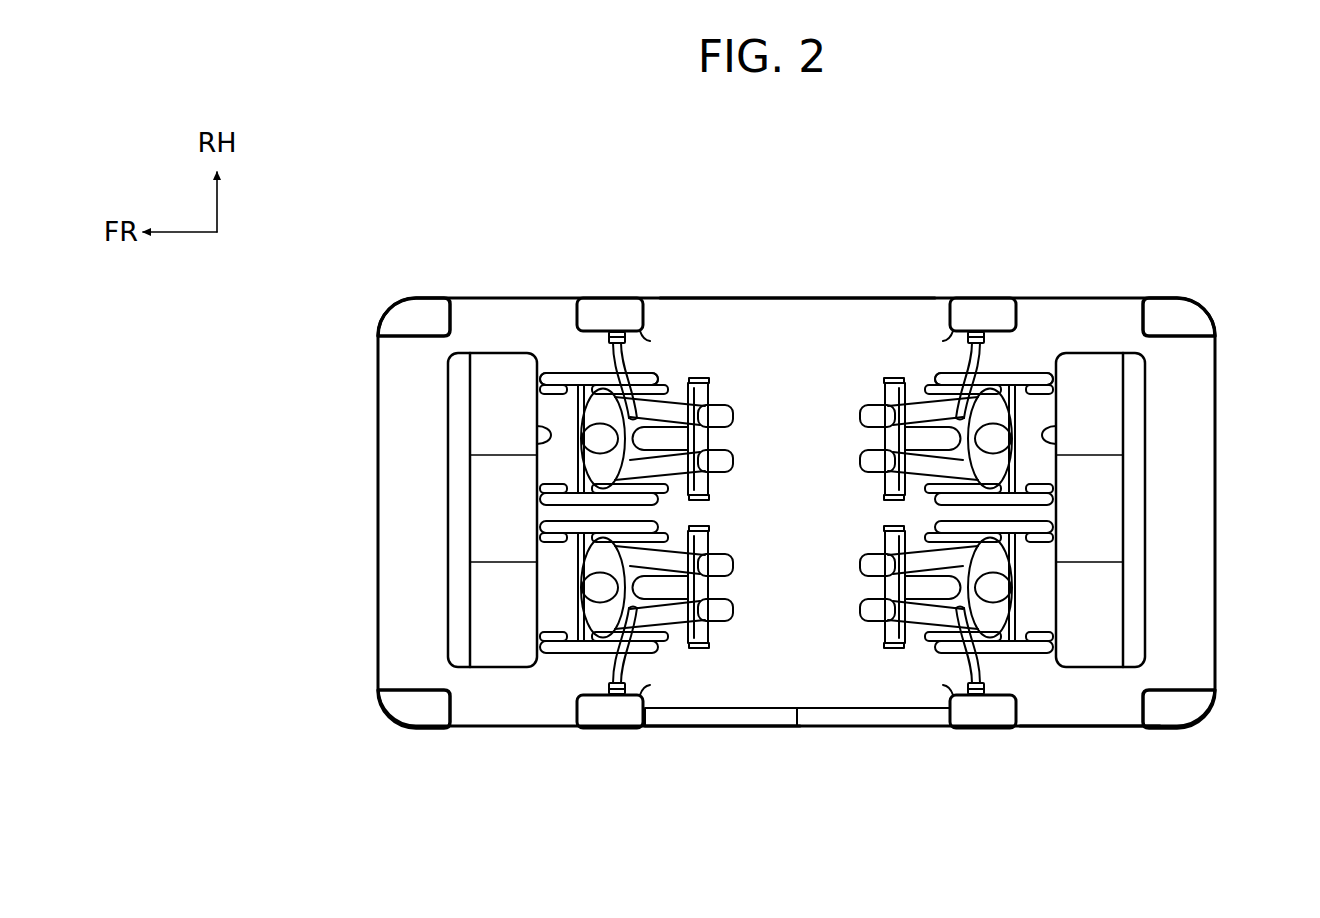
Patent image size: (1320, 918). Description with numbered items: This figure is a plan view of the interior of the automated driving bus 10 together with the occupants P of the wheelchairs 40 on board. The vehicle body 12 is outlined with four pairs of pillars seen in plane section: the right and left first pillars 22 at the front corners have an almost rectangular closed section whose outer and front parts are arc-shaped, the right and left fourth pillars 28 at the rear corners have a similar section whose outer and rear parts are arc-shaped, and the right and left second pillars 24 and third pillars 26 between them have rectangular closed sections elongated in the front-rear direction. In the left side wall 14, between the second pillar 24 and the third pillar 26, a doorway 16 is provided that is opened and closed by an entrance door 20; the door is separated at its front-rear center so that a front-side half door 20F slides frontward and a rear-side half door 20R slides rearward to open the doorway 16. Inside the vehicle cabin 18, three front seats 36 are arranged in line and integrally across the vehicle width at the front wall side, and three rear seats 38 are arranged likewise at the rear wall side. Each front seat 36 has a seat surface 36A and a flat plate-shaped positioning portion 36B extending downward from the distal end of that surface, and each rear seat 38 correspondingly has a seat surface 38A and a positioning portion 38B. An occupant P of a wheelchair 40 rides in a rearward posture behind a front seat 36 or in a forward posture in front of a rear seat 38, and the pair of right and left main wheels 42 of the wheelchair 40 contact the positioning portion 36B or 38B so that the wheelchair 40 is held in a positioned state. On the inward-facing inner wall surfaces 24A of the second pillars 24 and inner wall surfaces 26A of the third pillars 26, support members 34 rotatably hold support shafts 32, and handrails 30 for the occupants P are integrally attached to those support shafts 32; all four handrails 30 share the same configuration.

The bus 10 is at (1145, 174).
The vehicle body 12 is at (821, 293).
The left side wall 14 is at (1112, 728).
The doorway 16 is at (650, 704).
The vehicle cabin 18 is at (783, 515).
The entrance door 20 is at (875, 820).
The front-side half door 20F is at (742, 720).
The rear-side half door 20R is at (848, 720).
The first pillar 22 is at (418, 322).
The second pillar 24 is at (628, 312).
The inner wall surface 24A is at (655, 338).
The third pillar 26 is at (965, 312).
The inner wall surface 26A is at (930, 338).
The fourth pillar 28 is at (1180, 322).
The handrail 30 is at (672, 385).
The support shaft 32 is at (597, 338).
The support member 34 is at (617, 330).
The front seat 36 is at (490, 398).
The seat surface 36A is at (500, 365).
The positioning portion 36B is at (545, 437).
The rear seat 38 is at (1105, 398).
The seat surface 38A is at (1090, 365).
The positioning portion 38B is at (1050, 437).
The wheelchair 40 is at (652, 356).
The main wheel 42 is at (540, 380).
The occupant P is at (578, 388).